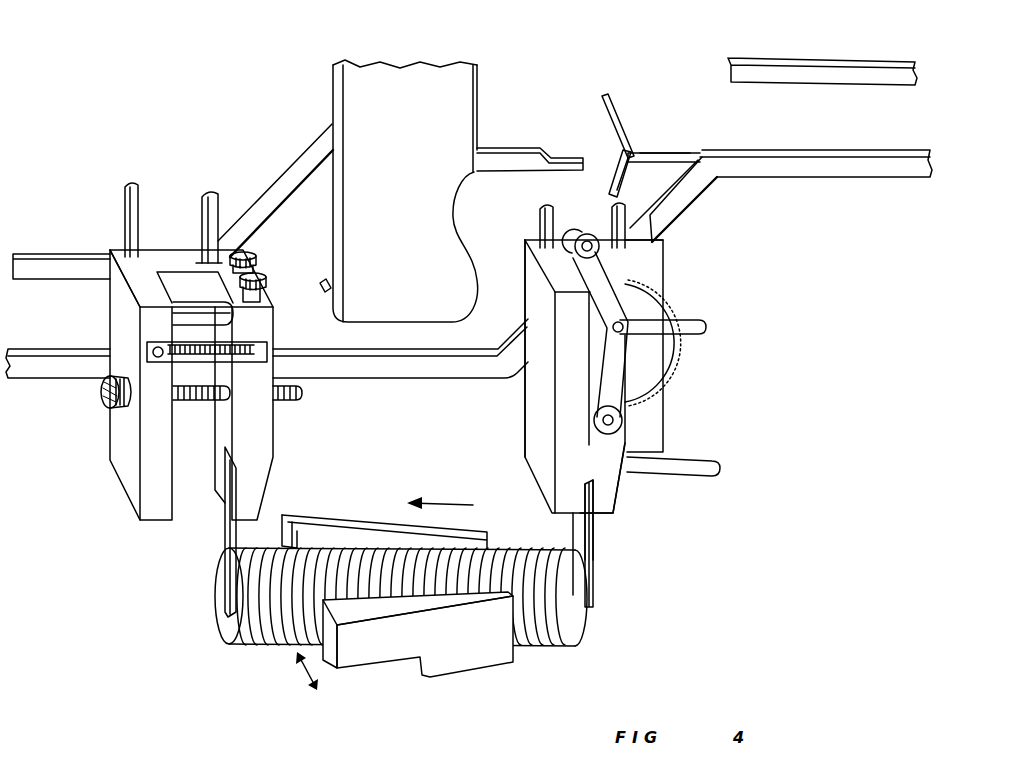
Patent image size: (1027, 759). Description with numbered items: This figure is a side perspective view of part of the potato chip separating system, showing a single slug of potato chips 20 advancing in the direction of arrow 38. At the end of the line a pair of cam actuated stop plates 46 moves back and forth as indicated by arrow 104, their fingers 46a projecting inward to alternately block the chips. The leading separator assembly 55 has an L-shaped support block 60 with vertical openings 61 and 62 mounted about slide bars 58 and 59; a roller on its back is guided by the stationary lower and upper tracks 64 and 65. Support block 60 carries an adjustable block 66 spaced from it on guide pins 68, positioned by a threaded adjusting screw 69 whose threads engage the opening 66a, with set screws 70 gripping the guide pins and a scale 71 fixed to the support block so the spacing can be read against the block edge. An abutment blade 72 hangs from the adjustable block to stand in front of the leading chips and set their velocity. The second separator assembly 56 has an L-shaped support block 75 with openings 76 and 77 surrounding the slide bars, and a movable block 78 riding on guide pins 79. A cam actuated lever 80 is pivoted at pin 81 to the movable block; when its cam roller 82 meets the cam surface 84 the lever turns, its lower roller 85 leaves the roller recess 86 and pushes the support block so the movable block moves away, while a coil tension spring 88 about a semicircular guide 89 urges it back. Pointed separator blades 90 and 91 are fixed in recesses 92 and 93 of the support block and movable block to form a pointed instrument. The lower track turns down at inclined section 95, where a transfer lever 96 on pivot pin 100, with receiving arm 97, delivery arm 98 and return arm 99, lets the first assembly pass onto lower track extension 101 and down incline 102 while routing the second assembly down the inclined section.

The potato chips 20 is at (235, 642).
The arrow 38 is at (440, 500).
The cam actuated stop plates 46 is at (342, 520).
The fingers 46a is at (283, 540).
The leading separator assembly 55 is at (113, 240).
The second separator assembly 56 is at (533, 393).
The slide bar 58 is at (135, 200).
The slide bar 59 is at (218, 210).
The L-shaped support block 60 is at (122, 478).
The vertically oriented opening 61 is at (140, 262).
The vertically oriented opening 62 is at (205, 262).
The lower track 64 is at (50, 368).
The upper track 65 is at (50, 265).
The adjustable block 66 is at (260, 447).
The opening 66a is at (222, 405).
The guide pins 68 is at (207, 322).
The threaded adjusting screw 69 is at (291, 403).
The set screws 70 is at (264, 278).
The scale 71 is at (260, 352).
The abutment blade 72 is at (226, 540).
The L-shaped support block 75 is at (538, 430).
The opening 76 is at (540, 246).
The opening 77 is at (645, 245).
The movable block 78 is at (612, 494).
The guide pins 79 is at (682, 323).
The cam actuated lever 80 is at (614, 393).
The pivot pin 81 is at (630, 334).
The cam roller 82 is at (580, 228).
The cam surface 84 is at (470, 305).
The roller 85 is at (621, 422).
The roller recess 86 is at (614, 438).
The coil tension spring 88 is at (655, 292).
The semicircular guide 89 is at (660, 354).
The separator blade 90 is at (573, 530).
The separator blade 91 is at (595, 541).
The recess 92 is at (586, 490).
The recess 93 is at (598, 492).
The inclined section 95 is at (698, 182).
The transfer lever 96 is at (647, 130).
The receiving arm 97 is at (676, 153).
The delivery arm 98 is at (603, 109).
The return arm 99 is at (611, 178).
The pivot pin 100 is at (630, 165).
The lower track extension 101 is at (506, 147).
The downward incline 102 is at (326, 284).
The arrow 104 is at (300, 682).